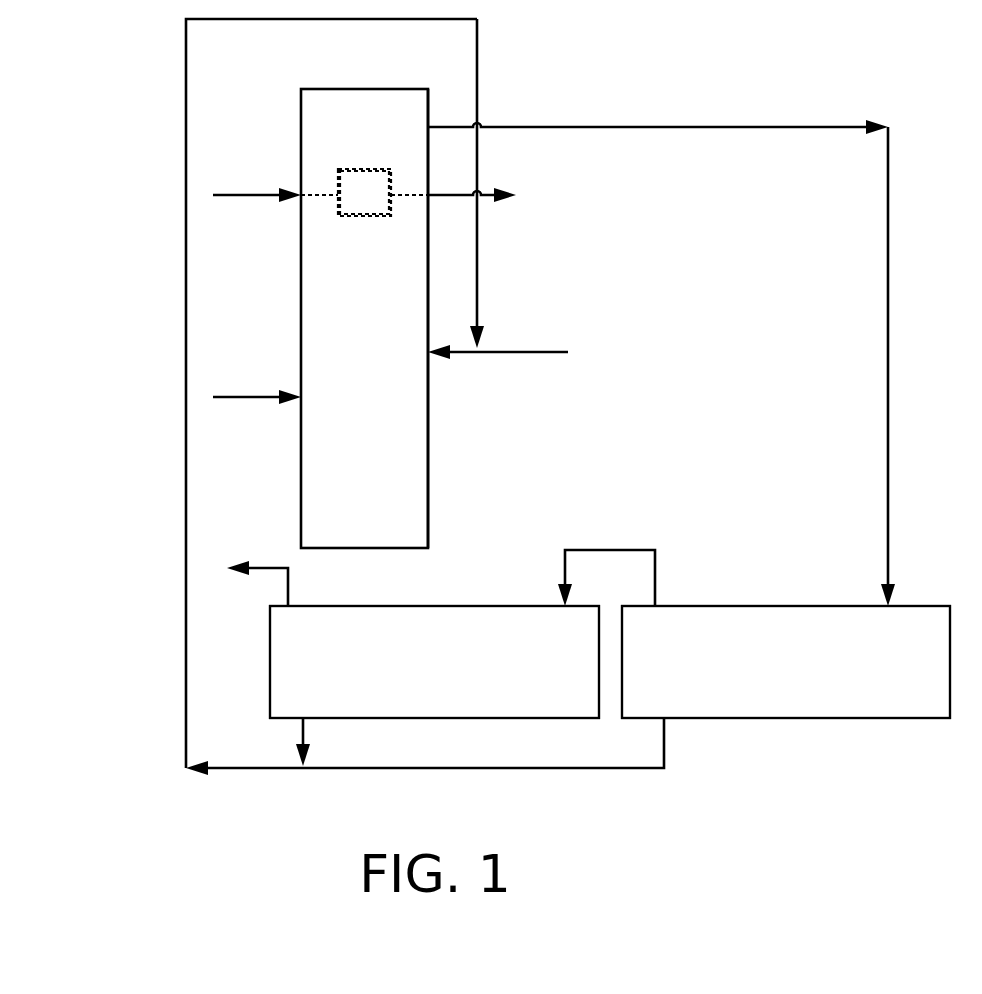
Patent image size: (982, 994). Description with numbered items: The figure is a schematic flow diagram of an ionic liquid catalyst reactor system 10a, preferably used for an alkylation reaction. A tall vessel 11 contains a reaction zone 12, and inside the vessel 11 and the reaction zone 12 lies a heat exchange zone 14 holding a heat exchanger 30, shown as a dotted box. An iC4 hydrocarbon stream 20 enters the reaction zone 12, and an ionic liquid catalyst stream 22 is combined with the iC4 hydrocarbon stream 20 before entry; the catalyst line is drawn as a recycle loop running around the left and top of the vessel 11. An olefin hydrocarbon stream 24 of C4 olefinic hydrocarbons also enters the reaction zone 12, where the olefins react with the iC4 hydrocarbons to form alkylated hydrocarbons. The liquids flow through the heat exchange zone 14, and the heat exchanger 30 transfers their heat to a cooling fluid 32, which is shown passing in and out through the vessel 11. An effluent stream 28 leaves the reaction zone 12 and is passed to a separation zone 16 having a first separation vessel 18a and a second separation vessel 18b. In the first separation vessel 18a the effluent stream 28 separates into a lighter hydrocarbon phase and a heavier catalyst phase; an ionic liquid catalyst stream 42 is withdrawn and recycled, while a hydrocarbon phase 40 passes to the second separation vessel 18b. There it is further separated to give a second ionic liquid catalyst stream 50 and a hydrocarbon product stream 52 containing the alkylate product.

The ionic liquid catalyst reactor system 10a is at (935, 226).
The vessel 11 is at (428, 513).
The reaction zone 12 is at (458, 457).
The heat exchange zone 14 is at (355, 155).
The separation zone 16 is at (676, 510).
The first separation vessel 18a is at (706, 720).
The second separation vessel 18b is at (477, 606).
The iC4 hydrocarbon stream 20 is at (539, 352).
The ionic liquid catalyst stream 22 is at (478, 299).
The olefin hydrocarbon stream 24 is at (250, 394).
The effluent stream 28 is at (643, 127).
The heat exchanger 30 is at (378, 183).
The cooling fluid 32 is at (452, 193).
The hydrocarbon phase 40 is at (655, 558).
The ionic liquid catalyst stream 42 is at (588, 768).
The second ionic liquid catalyst stream 50 is at (303, 735).
The hydrocarbon product stream 52 is at (288, 578).